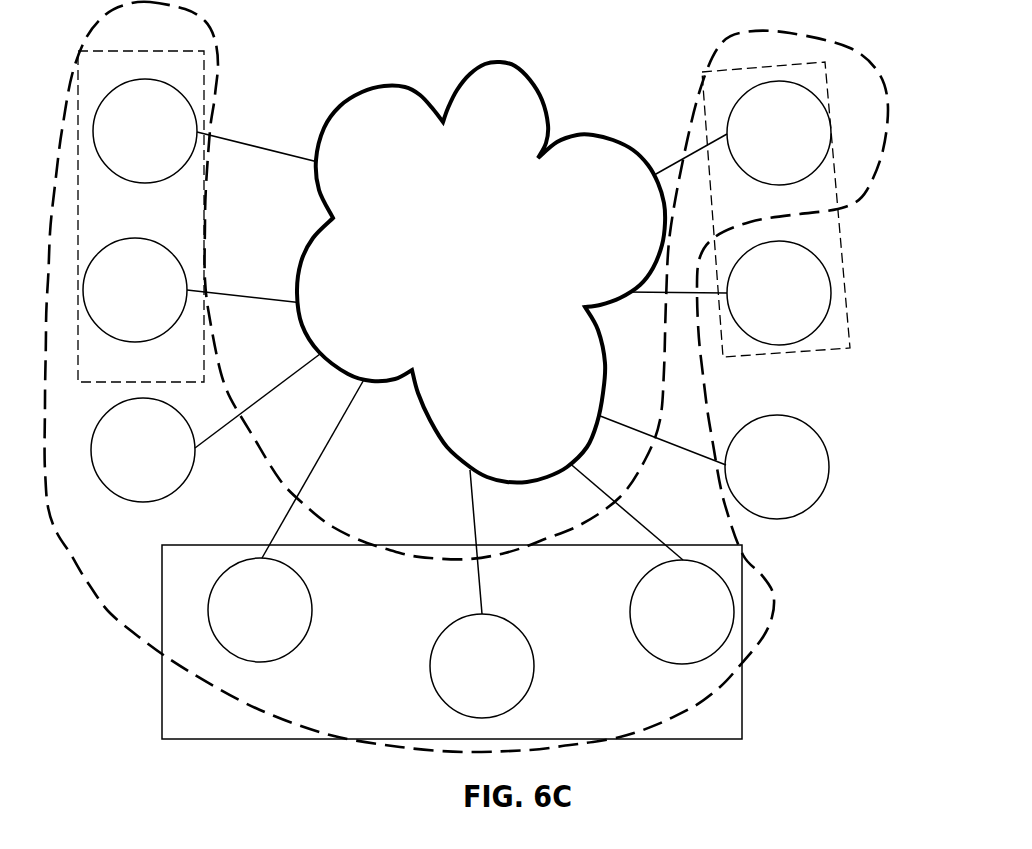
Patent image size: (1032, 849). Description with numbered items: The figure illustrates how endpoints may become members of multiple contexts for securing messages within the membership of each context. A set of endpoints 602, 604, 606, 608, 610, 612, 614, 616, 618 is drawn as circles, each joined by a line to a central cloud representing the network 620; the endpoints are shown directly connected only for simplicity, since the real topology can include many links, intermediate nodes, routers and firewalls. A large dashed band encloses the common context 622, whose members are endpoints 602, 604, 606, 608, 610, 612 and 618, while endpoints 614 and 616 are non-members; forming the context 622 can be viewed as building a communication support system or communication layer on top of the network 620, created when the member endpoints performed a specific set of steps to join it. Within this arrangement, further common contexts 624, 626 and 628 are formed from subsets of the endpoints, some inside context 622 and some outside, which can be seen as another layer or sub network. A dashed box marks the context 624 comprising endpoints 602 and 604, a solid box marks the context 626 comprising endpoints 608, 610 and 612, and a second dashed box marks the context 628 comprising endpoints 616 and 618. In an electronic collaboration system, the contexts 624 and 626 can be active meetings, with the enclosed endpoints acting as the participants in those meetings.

The endpoint 602 is at (145, 131).
The endpoint 604 is at (135, 290).
The endpoint 606 is at (143, 450).
The endpoint 608 is at (260, 610).
The endpoint 610 is at (482, 666).
The endpoint 612 is at (682, 612).
The endpoint 614 is at (777, 467).
The endpoint 616 is at (779, 293).
The endpoint 618 is at (779, 133).
The network 620 is at (481, 272).
The common context 622 is at (775, 578).
The common context 624 is at (213, 78).
The common context 626 is at (723, 743).
The common context 628 is at (838, 355).